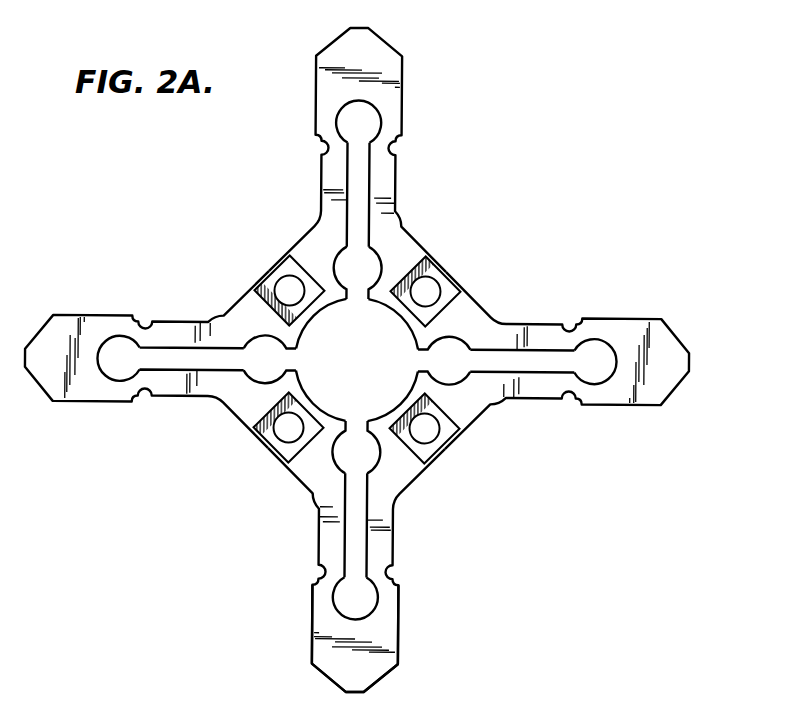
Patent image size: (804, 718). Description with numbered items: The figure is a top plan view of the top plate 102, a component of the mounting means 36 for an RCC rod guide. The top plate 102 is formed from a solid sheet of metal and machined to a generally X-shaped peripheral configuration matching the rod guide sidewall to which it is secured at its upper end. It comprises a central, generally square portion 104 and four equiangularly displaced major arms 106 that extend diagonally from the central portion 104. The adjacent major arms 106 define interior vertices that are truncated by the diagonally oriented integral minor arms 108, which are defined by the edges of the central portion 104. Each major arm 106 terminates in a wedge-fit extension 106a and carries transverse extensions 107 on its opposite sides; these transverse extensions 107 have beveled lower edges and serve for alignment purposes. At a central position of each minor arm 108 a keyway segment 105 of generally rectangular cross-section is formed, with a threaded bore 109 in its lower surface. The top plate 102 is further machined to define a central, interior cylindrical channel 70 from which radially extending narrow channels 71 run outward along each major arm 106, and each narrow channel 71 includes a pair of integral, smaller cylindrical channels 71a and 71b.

The mounting means 36 is at (216, 472).
The central cylindrical channel 70 is at (372, 369).
The radially extending narrow channel 71 is at (358, 190).
The smaller cylindrical channel 71a is at (462, 371).
The smaller cylindrical channel 71b is at (605, 377).
The top plate 102 is at (220, 417).
The central portion 104 is at (333, 266).
The keyway segment 105 is at (450, 432).
The major arm 106 is at (397, 163).
The wedge-fit extension 106a is at (351, 688).
The transverse extension 107 is at (313, 621).
The minor arm 108 is at (460, 292).
The threaded bore 109 is at (427, 436).